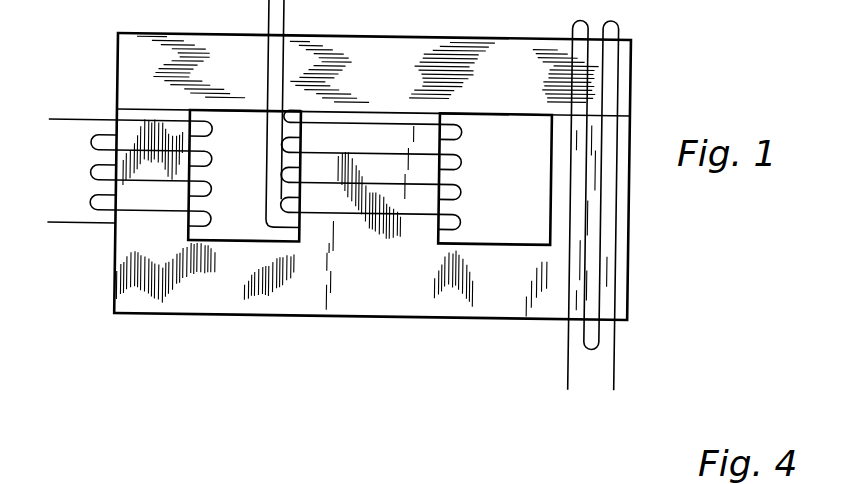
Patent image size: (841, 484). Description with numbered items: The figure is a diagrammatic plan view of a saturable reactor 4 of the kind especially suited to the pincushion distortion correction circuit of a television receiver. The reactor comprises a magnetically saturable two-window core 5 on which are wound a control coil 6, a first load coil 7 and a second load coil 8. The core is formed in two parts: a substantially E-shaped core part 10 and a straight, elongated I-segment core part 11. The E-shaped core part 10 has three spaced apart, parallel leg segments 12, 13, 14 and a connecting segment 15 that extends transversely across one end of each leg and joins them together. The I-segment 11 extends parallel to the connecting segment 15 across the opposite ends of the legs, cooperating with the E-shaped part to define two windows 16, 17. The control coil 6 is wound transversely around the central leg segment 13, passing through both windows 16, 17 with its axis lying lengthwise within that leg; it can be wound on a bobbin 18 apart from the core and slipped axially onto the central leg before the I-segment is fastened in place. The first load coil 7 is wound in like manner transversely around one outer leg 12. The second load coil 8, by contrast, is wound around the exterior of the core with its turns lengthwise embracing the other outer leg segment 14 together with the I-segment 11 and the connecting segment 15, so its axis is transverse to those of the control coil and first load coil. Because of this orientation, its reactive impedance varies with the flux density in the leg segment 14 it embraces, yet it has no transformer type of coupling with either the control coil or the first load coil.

In FIG. 1, the saturable reactor 4 is at (104, 52).
In FIG. 1, the magnetically saturable two-window core 5 is at (391, 297).
In FIG. 1, the control coil 6 is at (466, 128).
In FIG. 1, the first load coil 7 is at (76, 118).
In FIG. 1, the second load coil 8 is at (604, 72).
In FIG. 4, the second load coil 8 is at (345, 483).
In FIG. 1, the core part 10 is at (106, 280).
In FIG. 1, the core part 11 is at (472, 41).
In FIG. 4, the core part 11 is at (205, 483).
In FIG. 1, the leg segment 12 is at (165, 190).
In FIG. 1, the central leg segment 13 is at (447, 176).
In FIG. 1, the leg segment 14 is at (613, 231).
In FIG. 1, the connecting segment 15 is at (327, 284).
In FIG. 1, the window 16 is at (217, 233).
In FIG. 1, the window 17 is at (500, 238).
In FIG. 4, the bobbin 18 is at (187, 483).